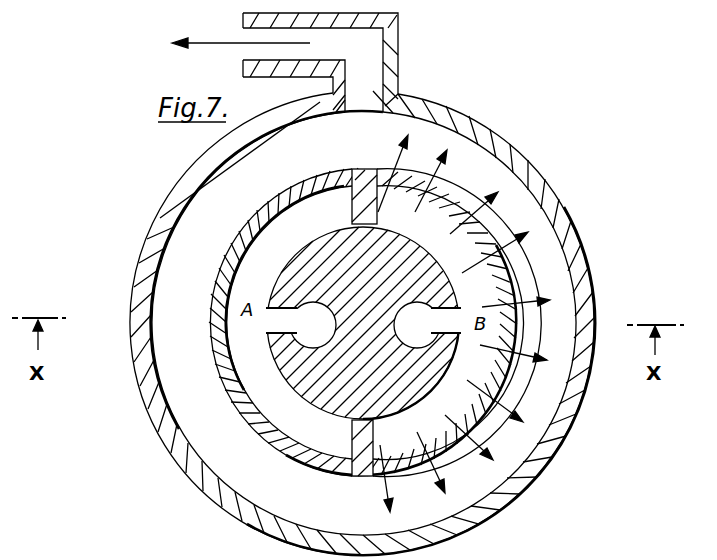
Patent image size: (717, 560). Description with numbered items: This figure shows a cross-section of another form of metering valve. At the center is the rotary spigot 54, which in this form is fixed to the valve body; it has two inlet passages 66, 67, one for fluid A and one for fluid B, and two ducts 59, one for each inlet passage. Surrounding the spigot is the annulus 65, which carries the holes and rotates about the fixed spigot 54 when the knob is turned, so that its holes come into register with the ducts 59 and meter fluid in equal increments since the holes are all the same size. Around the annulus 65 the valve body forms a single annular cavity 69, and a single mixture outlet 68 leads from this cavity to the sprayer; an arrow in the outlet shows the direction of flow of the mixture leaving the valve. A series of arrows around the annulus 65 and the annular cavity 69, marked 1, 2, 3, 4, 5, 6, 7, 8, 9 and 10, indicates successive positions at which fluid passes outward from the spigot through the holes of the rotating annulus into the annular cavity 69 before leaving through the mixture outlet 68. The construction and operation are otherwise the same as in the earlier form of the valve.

The hole position 1 is at (396, 173).
The flow arrow at position 2 is at (437, 181).
The flow arrow at position 3 is at (474, 213).
The flow arrow at position 4 is at (495, 252).
The flow arrow at position 5 is at (516, 313).
The flow arrow at position 6 is at (513, 349).
The flow arrow at position 7 is at (495, 401).
The flow arrow at position 8 is at (469, 437).
The flow arrow at position 9 is at (434, 462).
The flow arrow at position 10 is at (398, 478).
The rotary spigot 54 is at (291, 363).
The duct 59 is at (291, 336).
The annulus 65 is at (497, 290).
The inlet passage 66 is at (313, 325).
The inlet passage 67 is at (417, 325).
The mixture outlet 68 is at (357, 84).
The annular cavity 69 is at (423, 128).